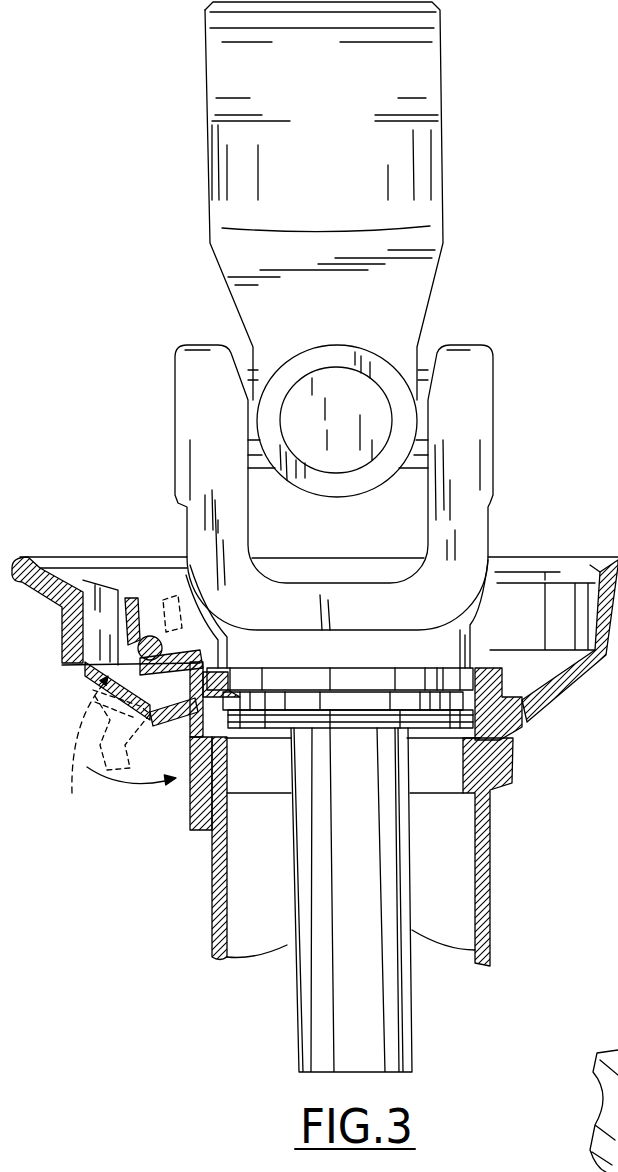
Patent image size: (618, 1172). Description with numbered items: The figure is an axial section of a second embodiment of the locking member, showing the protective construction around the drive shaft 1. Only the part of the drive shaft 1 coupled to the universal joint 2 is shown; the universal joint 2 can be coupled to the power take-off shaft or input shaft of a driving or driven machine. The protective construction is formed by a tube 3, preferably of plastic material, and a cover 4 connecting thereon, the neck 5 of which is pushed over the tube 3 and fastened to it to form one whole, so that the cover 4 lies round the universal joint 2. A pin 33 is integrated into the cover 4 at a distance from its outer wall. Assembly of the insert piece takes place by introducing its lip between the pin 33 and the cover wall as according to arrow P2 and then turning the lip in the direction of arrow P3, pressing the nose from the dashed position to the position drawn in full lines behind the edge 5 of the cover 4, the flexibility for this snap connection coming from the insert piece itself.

The drive shaft 1 is at (362, 1037).
The universal joint 2 is at (462, 408).
The tube 3 is at (480, 888).
The cover 4 is at (571, 692).
The neck 5 is at (208, 831).
The pin 33 is at (127, 647).
The arrow P2 is at (77, 734).
The arrow P3 is at (131, 791).